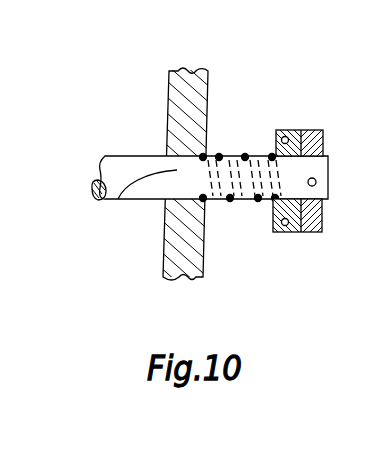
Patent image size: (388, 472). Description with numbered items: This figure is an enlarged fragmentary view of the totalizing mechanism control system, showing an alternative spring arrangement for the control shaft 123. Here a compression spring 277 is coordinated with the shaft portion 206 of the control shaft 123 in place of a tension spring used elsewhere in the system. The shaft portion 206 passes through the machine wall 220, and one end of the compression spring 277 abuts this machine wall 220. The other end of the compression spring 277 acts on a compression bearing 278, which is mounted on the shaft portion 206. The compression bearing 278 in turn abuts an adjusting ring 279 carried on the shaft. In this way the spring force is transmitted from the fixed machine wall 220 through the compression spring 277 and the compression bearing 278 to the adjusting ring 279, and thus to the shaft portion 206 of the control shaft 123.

The control shaft 123 is at (113, 156).
The shaft portion 206 is at (118, 200).
The machine wall 220 is at (196, 76).
The compression spring 277 is at (244, 153).
The compression bearing 278 is at (284, 128).
The adjusting ring 279 is at (313, 233).